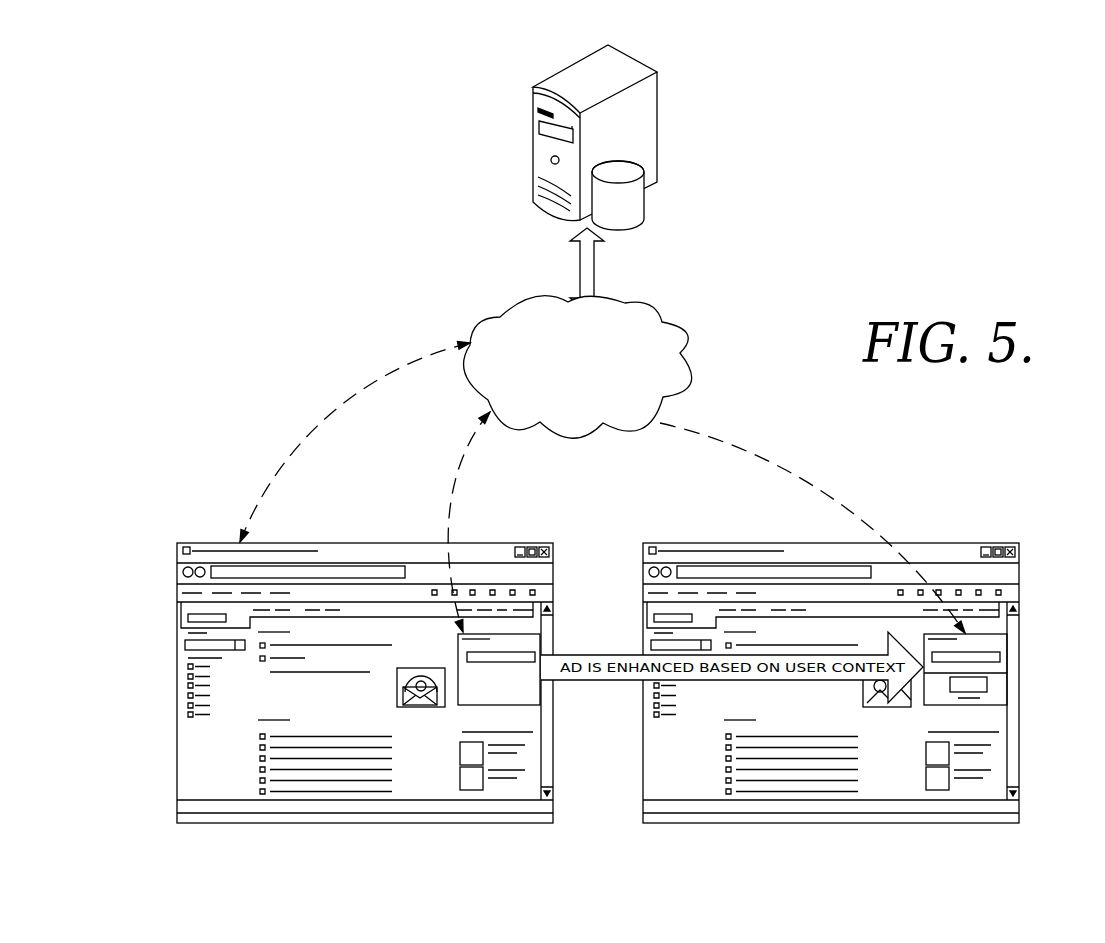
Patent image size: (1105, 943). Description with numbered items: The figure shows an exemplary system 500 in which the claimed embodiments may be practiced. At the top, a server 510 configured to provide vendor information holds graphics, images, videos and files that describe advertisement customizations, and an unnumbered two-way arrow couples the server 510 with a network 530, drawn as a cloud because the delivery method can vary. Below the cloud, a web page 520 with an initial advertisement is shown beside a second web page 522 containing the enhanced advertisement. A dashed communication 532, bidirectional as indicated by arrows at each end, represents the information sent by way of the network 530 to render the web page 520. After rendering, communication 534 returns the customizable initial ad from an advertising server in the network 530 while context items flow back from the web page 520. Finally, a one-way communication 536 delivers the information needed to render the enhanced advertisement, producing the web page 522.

The system 500 is at (250, 73).
The server 510 is at (532, 97).
The network 530 is at (500, 317).
The web page 520 is at (177, 558).
The second web page 522 is at (1020, 593).
The communication 532 is at (288, 458).
The communication 534 is at (455, 472).
The communication 536 is at (830, 500).